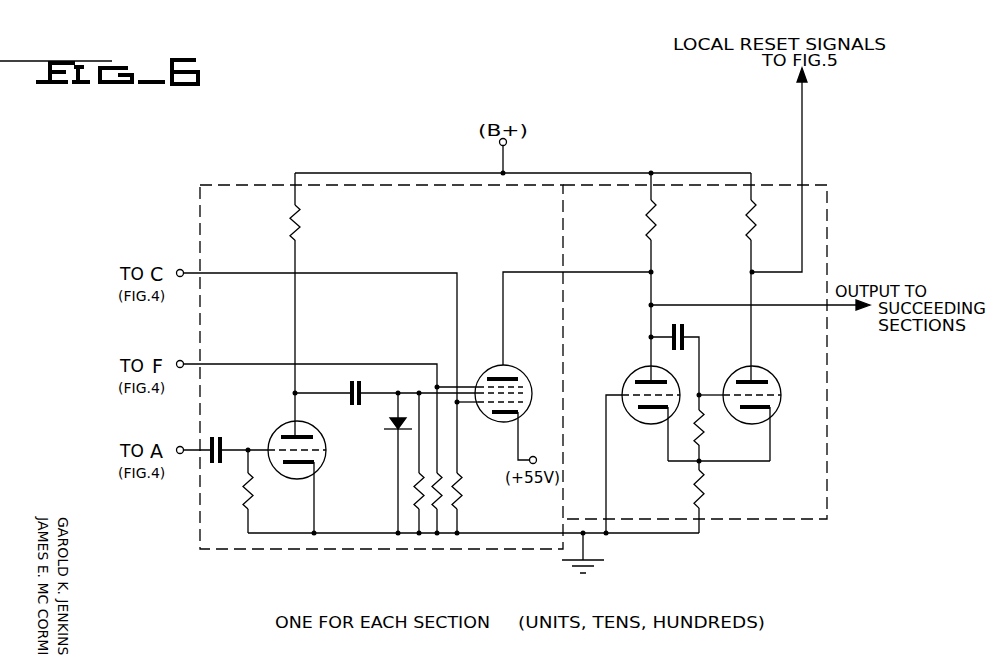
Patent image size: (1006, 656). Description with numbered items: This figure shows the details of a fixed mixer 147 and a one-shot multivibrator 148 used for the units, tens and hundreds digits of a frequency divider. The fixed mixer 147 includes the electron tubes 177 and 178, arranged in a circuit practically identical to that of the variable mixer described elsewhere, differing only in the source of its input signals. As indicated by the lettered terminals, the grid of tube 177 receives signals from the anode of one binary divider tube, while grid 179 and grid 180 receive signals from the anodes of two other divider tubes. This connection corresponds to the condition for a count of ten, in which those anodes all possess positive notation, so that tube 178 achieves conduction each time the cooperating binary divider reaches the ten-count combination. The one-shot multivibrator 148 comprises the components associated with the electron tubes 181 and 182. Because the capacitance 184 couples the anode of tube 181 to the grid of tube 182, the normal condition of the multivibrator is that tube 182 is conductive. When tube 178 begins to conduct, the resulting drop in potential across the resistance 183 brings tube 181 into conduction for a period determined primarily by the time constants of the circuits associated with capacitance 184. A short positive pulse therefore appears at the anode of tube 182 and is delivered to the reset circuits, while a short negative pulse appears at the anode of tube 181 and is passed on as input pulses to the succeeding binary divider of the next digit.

The fixed mixer 147 is at (452, 548).
The one-shot multivibrator 148 is at (742, 518).
The electron tube 177 is at (280, 432).
The electron tube 178 is at (483, 414).
The grid 179 is at (523, 408).
The grid 180 is at (521, 383).
The electron tube 181 is at (630, 379).
The electron tube 182 is at (772, 380).
The resistance 183 is at (654, 230).
The capacitance 184 is at (678, 324).